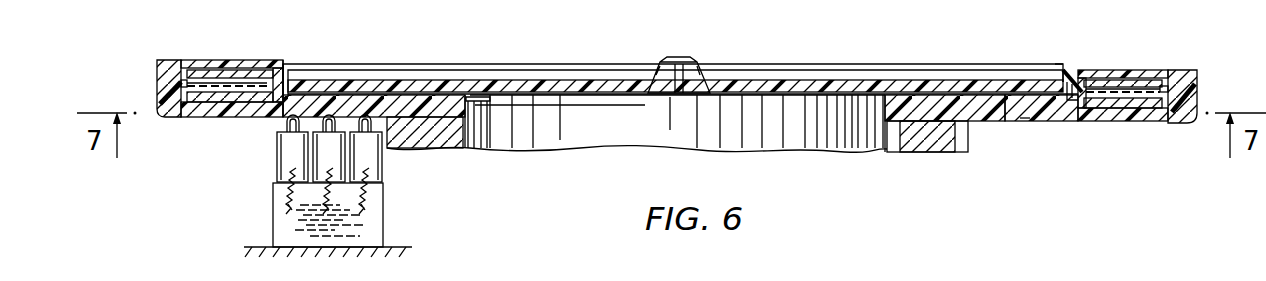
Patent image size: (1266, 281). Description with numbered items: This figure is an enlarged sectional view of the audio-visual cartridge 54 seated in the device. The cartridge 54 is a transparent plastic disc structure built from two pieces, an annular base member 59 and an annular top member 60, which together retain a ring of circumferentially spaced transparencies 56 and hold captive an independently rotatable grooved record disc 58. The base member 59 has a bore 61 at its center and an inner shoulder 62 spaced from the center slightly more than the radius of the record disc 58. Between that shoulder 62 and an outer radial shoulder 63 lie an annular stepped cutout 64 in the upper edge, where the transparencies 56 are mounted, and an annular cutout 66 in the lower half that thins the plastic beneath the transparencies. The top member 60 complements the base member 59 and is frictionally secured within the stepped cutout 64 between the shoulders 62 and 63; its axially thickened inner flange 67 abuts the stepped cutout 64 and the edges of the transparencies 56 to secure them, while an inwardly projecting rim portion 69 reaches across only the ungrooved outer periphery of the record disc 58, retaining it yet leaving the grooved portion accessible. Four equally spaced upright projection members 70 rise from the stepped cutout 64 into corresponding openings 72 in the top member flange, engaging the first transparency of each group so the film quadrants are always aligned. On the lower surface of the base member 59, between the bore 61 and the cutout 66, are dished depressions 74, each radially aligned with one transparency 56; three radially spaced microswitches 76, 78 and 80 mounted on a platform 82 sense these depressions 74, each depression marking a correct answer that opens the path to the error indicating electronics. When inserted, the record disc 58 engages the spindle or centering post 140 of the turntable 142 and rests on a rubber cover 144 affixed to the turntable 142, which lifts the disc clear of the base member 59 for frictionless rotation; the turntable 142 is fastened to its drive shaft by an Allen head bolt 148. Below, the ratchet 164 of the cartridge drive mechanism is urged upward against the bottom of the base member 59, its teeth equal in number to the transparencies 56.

The audio-visual cartridge 54 is at (1071, 126).
The transparencies 56 is at (232, 84).
The grooved record disc 58 is at (540, 90).
The annular base member 59 is at (997, 124).
The annular top member 60 is at (286, 58).
The bore 61 is at (490, 97).
The shoulder 62 is at (1085, 112).
The outer radial shoulder 63 is at (156, 77).
The annular stepped cutout 64 is at (1165, 102).
The annular cutout 66 is at (178, 118).
The axially thickened inner flange 67 is at (1088, 72).
The inwardly projecting rim portion 69 is at (297, 70).
The upright projection members 70 is at (1164, 84).
The openings 72 is at (1168, 88).
The depressions 74 is at (365, 114).
The microswitch 76 is at (282, 146).
The microswitch 78 is at (322, 153).
The microswitch 80 is at (370, 155).
The platform 82 is at (372, 225).
The spindle or centering post 140 is at (703, 64).
The turntable 142 is at (584, 155).
The cover 144 is at (828, 100).
The Allen head bolt 148 is at (681, 58).
The ratchet 164 is at (932, 158).